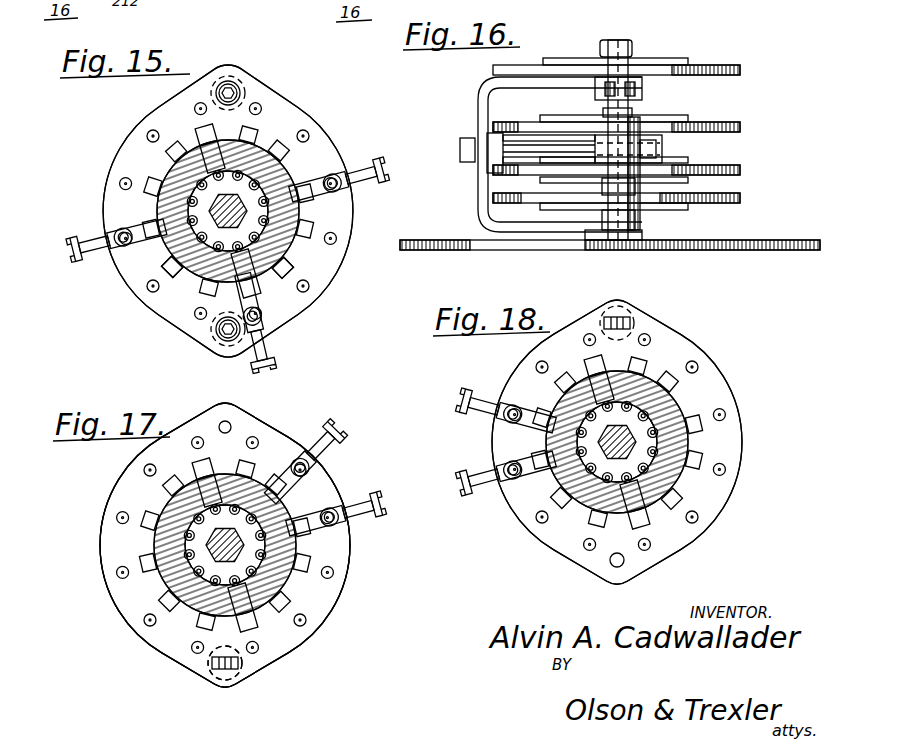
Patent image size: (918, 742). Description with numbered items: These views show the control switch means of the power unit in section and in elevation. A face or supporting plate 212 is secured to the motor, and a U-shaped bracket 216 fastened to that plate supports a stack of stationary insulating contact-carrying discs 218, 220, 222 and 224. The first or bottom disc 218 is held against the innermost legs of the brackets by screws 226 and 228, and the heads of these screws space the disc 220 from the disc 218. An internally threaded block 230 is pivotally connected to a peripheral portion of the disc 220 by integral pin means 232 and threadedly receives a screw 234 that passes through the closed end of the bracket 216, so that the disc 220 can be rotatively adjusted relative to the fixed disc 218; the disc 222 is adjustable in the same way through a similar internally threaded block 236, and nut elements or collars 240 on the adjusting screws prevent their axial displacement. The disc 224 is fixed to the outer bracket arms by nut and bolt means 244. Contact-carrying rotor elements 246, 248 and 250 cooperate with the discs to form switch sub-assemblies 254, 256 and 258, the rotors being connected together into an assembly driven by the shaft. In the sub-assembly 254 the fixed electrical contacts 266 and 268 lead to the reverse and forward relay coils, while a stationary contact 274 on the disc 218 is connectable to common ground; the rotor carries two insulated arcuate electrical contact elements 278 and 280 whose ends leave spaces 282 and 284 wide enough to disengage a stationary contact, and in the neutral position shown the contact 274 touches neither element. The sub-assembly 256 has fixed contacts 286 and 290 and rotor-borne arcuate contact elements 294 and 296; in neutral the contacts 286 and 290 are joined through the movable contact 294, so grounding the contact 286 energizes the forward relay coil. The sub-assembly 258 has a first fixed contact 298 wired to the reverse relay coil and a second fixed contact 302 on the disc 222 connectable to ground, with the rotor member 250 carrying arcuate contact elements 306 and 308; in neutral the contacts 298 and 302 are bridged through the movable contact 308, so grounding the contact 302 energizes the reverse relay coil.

In FIG. 16, the supporting plate 212 is at (772, 240).
In FIG. 16, the U-shaped bracket 216 is at (482, 205).
In FIG. 15, the bottom disc 218 is at (287, 313).
In FIG. 16, the bottom disc 218 is at (742, 198).
In FIG. 16, the disc 220 is at (742, 170).
In FIG. 17, the disc 220 is at (313, 602).
In FIG. 16, the disc 222 is at (742, 126).
In FIG. 18, the disc 222 is at (725, 435).
In FIG. 16, the disc 224 is at (742, 70).
In FIG. 15, the screw 226 is at (240, 93).
In FIG. 15, the screw 228 is at (242, 347).
In FIG. 16, the screw 228 is at (625, 182).
In FIG. 16, the internally threaded block 230 is at (622, 130).
In FIG. 17, the internally threaded block 230 is at (240, 678).
In FIG. 17, the integral pin means 232 is at (222, 672).
In FIG. 16, the screw 234 is at (520, 152).
In FIG. 18, the internally threaded block 236 is at (658, 312).
In FIG. 16, the nut elements or collars 240 is at (490, 150).
In FIG. 16, the nut and bolt means 244 is at (620, 50).
In FIG. 15, the rotor element 246 is at (200, 286).
In FIG. 15, the rotor element 248 is at (227, 210).
In FIG. 17, the rotor element 248 is at (237, 567).
In FIG. 18, the rotor element 250 is at (603, 463).
In FIG. 15, the switch sub-assembly 254 is at (100, 182).
In FIG. 17, the switch sub-assembly 256 is at (110, 617).
In FIG. 18, the switch sub-assembly 258 is at (505, 517).
In FIG. 15, the fixed electrical contact 266 is at (318, 185).
In FIG. 15, the fixed electrical contact 268 is at (122, 250).
In FIG. 15, the stationary contact 274 is at (256, 355).
In FIG. 15, the arcuate electrical contact element 278 is at (327, 262).
In FIG. 15, the arcuate electrical contact element 280 is at (165, 263).
In FIG. 17, the arcuate electrical contact element 280 is at (168, 643).
In FIG. 15, the space 282 is at (222, 320).
In FIG. 15, the space 284 is at (140, 142).
In FIG. 17, the contact 286 is at (315, 532).
In FIG. 17, the contact 290 is at (310, 472).
In FIG. 17, the arcuate electrical contact element 294 is at (262, 490).
In FIG. 17, the arcuate electrical contact element 296 is at (162, 539).
In FIG. 18, the first fixed contact 298 is at (555, 475).
In FIG. 18, the second fixed contact 302 is at (508, 407).
In FIG. 18, the arcuate electrical contact element 306 is at (690, 483).
In FIG. 18, the arcuate electrical contact element 308 is at (587, 472).